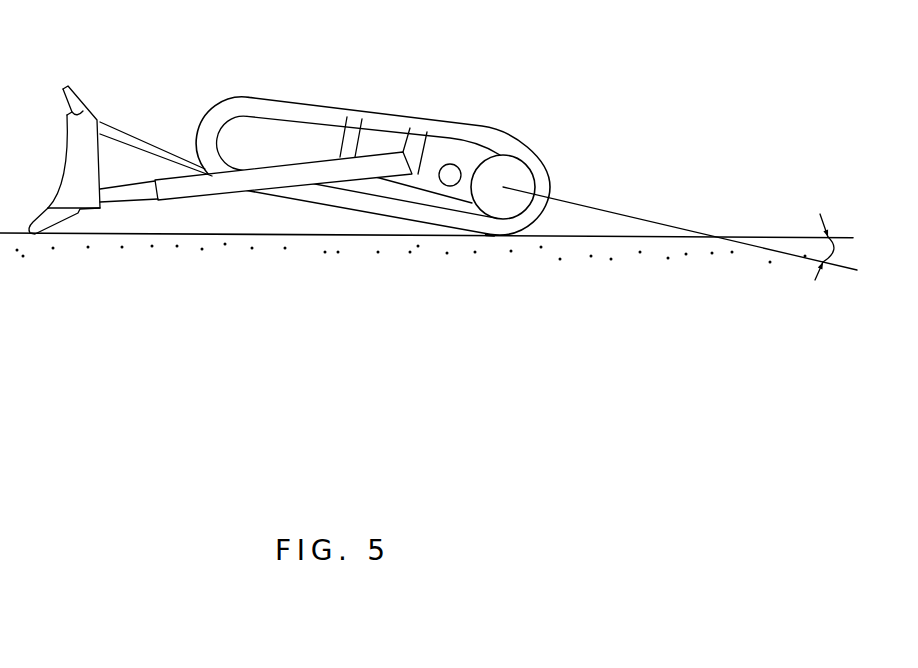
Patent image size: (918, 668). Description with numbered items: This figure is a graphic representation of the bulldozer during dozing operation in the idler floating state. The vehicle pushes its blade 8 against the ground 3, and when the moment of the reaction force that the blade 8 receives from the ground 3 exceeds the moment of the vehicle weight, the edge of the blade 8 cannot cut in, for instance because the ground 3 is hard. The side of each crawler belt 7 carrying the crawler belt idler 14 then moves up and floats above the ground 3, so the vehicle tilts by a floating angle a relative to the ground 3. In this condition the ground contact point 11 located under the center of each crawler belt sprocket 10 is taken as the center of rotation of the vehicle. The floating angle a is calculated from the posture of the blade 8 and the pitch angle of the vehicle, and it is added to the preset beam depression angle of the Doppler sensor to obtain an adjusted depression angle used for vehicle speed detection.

The ground 3 is at (626, 236).
The crawler belt 7 is at (431, 118).
The blade 8 is at (53, 222).
The crawler belt sprocket 10 is at (505, 187).
The ground contact point 11 is at (490, 238).
The crawler belt idler 14 is at (248, 131).
The floating angle a is at (836, 250).